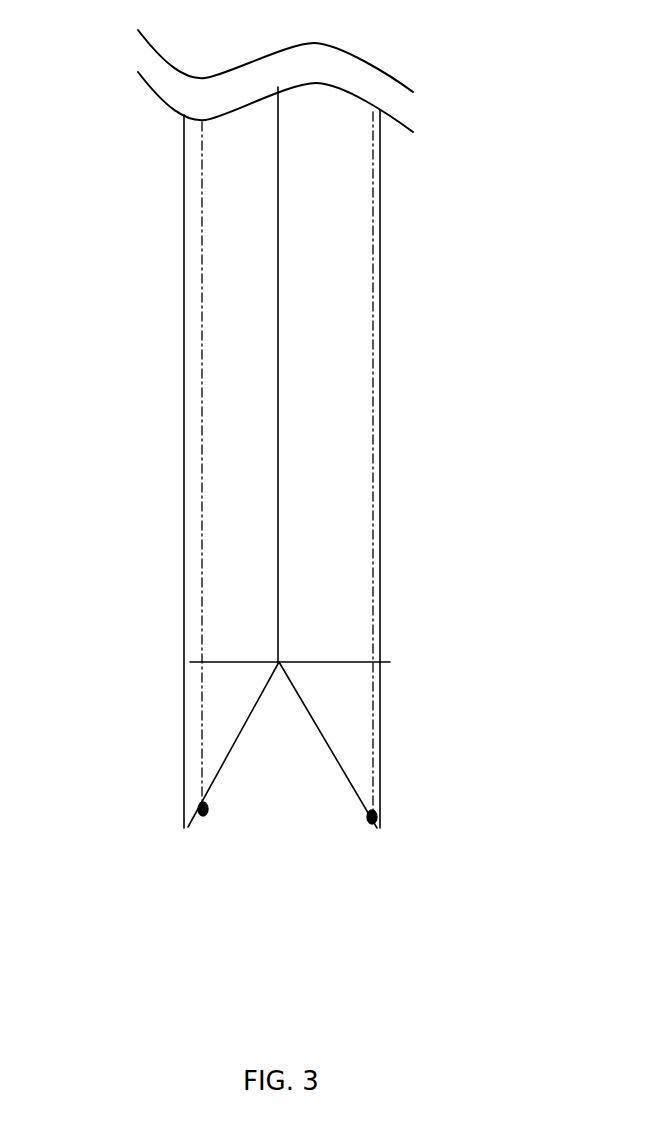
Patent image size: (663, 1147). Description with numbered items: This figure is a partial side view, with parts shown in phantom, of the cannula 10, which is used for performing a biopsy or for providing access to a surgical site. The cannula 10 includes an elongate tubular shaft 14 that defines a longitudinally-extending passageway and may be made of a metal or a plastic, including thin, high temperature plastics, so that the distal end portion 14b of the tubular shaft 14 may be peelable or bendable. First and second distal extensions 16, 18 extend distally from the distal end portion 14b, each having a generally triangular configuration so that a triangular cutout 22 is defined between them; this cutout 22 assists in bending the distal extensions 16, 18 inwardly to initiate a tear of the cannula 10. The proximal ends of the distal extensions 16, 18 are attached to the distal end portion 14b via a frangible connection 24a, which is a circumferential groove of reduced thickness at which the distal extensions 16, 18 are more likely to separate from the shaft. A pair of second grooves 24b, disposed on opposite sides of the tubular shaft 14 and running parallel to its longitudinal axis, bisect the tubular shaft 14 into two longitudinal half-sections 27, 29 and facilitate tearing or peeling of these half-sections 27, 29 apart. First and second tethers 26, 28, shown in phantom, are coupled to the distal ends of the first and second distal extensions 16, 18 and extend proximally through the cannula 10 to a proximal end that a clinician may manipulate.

The cannula 10 is at (410, 162).
The tubular shaft 14 is at (390, 212).
The distal end portion 14b is at (183, 580).
The first distal extension 16 is at (190, 772).
The second distal extension 18 is at (383, 782).
The triangular cutout 22 is at (293, 849).
The frangible connection 24a is at (210, 660).
The second grooves 24b is at (280, 558).
The first tether 26 is at (193, 223).
The first longitudinal half-section 27 is at (213, 377).
The second tether 28 is at (373, 288).
The second longitudinal half-section 29 is at (343, 388).